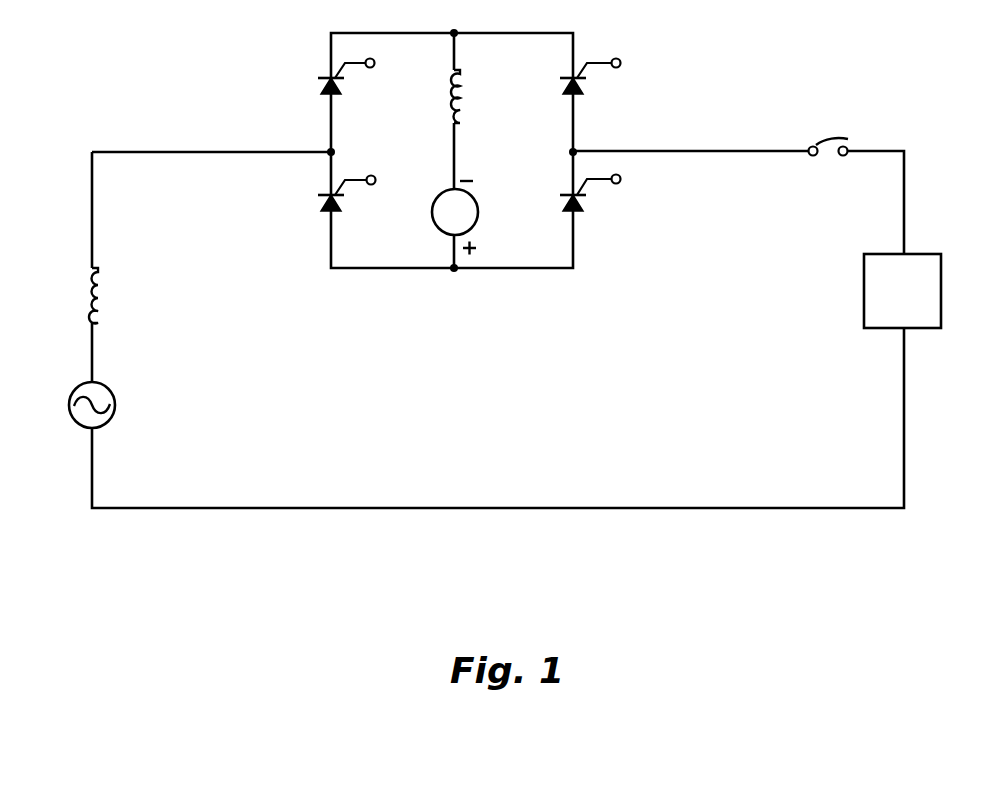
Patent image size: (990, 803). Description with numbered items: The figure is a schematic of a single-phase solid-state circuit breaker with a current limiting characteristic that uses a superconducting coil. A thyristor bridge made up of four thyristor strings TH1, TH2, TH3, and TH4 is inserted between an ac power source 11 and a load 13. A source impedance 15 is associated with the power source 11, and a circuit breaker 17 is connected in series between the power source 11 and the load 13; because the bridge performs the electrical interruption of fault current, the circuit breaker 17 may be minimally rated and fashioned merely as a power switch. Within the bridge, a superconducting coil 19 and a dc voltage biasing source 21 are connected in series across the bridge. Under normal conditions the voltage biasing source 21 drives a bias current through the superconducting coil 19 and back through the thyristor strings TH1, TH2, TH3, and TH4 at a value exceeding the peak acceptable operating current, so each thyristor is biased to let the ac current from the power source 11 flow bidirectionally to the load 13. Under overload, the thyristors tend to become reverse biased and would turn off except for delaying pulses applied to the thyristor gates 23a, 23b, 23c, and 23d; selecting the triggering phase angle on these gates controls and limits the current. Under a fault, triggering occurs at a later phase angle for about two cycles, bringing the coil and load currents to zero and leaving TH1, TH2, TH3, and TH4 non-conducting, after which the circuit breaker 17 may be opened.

The power source 11 is at (116, 402).
The load 13 is at (864, 296).
The source impedance 15 is at (104, 304).
The circuit breaker 17 is at (826, 136).
The superconducting coil 19 is at (463, 100).
The dc voltage biasing source 21 is at (478, 205).
The thyristor gate 23a is at (377, 65).
The thyristor gate 23b is at (380, 182).
The thyristor gate 23c is at (618, 64).
The thyristor gate 23d is at (620, 181).
The thyristor string TH1 is at (305, 81).
The thyristor string TH2 is at (597, 206).
The thyristor string TH3 is at (597, 83).
The thyristor string TH4 is at (305, 198).